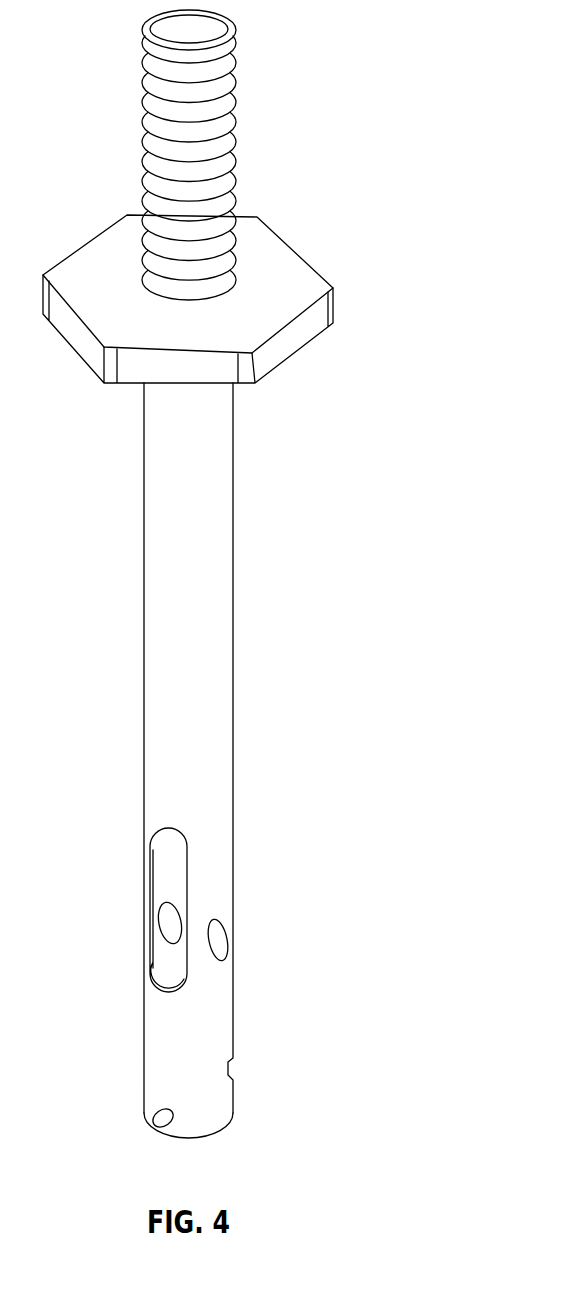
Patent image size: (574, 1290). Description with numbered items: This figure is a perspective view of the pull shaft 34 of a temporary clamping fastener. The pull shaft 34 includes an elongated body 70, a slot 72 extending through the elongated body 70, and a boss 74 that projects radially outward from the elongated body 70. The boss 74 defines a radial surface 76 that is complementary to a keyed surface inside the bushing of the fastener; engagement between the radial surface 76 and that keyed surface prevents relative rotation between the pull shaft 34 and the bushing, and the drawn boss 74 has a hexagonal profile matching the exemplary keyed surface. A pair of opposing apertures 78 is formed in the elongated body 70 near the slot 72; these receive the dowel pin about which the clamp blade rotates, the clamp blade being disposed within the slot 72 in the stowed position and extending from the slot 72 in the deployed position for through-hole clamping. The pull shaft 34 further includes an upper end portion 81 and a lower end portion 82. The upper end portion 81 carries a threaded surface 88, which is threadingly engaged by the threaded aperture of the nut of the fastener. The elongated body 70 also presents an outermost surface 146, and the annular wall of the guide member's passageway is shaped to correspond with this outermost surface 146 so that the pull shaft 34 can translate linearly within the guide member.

The pull shaft 34 is at (367, 255).
The upper end portion 81 is at (252, 70).
The threaded surface 88 is at (236, 138).
The boss 74 is at (277, 246).
The radial surface 76 is at (313, 322).
The elongated body 70 is at (203, 505).
The outermost surface 146 is at (220, 673).
The slot 72 is at (152, 878).
The opposing apertures 78 is at (165, 928).
The lower end portion 82 is at (243, 1097).